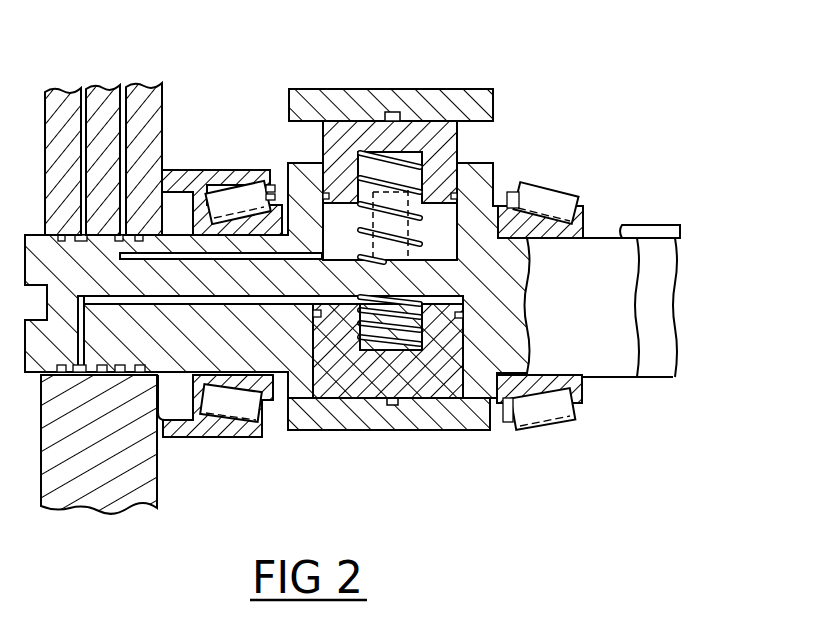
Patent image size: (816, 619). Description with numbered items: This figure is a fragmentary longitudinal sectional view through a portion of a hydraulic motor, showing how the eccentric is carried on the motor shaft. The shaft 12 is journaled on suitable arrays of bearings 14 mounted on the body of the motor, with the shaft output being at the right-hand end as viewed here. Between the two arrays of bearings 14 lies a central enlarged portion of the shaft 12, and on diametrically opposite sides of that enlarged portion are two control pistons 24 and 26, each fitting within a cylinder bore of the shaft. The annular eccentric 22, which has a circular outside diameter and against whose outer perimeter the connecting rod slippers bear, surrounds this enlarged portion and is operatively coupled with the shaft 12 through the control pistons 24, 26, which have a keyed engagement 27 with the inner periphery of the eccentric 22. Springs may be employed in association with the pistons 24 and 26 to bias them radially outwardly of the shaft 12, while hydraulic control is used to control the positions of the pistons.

The shaft 12 is at (660, 322).
The bearings 14 is at (222, 197).
The eccentric 22 is at (471, 102).
The control piston 24 is at (345, 130).
The control piston 26 is at (360, 382).
The keyed engagement 27 is at (398, 112).